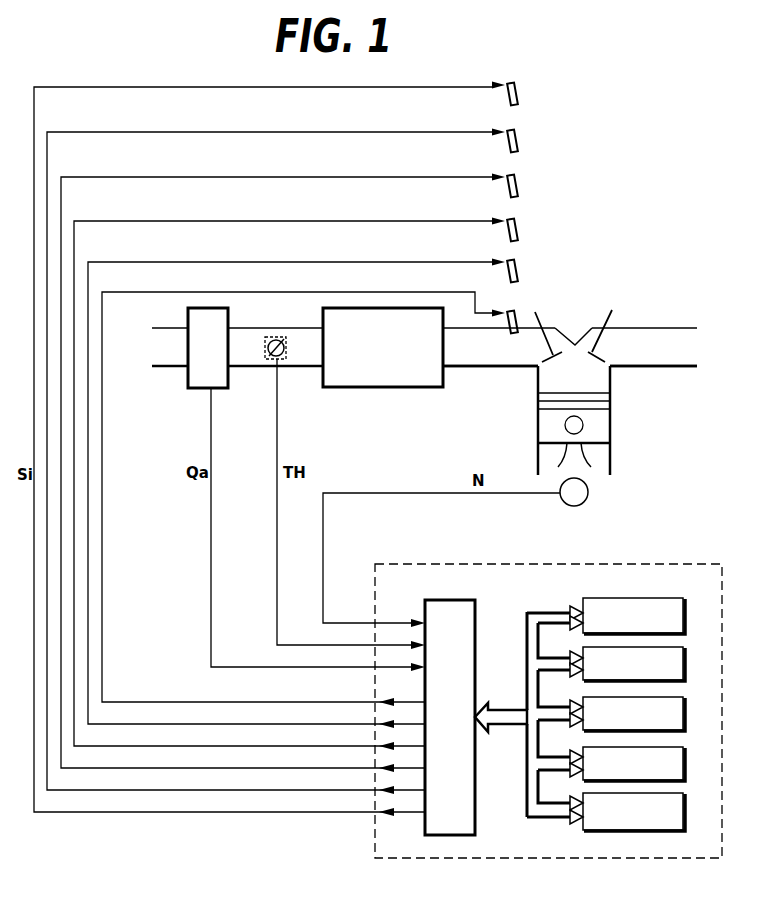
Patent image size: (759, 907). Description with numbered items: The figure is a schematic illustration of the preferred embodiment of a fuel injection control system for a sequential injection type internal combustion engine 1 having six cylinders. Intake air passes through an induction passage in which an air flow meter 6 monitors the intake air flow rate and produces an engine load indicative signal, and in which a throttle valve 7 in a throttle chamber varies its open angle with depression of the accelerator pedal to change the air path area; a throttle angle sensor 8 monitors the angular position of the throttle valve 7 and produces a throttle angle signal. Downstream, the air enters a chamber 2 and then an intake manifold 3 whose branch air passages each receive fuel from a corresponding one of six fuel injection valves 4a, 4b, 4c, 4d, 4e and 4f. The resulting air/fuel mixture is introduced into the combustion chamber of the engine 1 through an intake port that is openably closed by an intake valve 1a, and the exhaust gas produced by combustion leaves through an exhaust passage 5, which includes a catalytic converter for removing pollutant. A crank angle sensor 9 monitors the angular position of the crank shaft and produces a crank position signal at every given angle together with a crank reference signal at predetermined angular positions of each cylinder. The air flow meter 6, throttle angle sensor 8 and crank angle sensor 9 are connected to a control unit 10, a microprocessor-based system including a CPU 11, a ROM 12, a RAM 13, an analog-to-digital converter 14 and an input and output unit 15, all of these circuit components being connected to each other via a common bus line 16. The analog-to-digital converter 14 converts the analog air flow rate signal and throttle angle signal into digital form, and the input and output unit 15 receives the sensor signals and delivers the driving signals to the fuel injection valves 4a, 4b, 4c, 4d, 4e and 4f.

The internal combustion engine 1 is at (648, 243).
The intake valve 1a is at (537, 317).
The surge tank 2 is at (386, 389).
The intake manifold 3 is at (493, 367).
The fuel injection valve 4a is at (520, 92).
The fuel injection valve 4b is at (520, 139).
The fuel injection valve 4c is at (520, 184).
The fuel injection valve 4d is at (520, 228).
The fuel injection valve 4e is at (520, 269).
The fuel injection valve 4f is at (519, 313).
The exhaust passage 5 is at (665, 366).
The air flow meter 6 is at (216, 389).
The throttle valve 7 is at (280, 340).
The throttle angle sensor 8 is at (288, 351).
The crank angle sensor 9 is at (575, 506).
The control unit 10 is at (483, 563).
The CPU 11 is at (672, 646).
The ROM 12 is at (672, 696).
The RAM 13 is at (672, 746).
The analog-to-digital converter 14 is at (672, 792).
The input and output unit 15 is at (476, 612).
The common bus line 16 is at (672, 597).